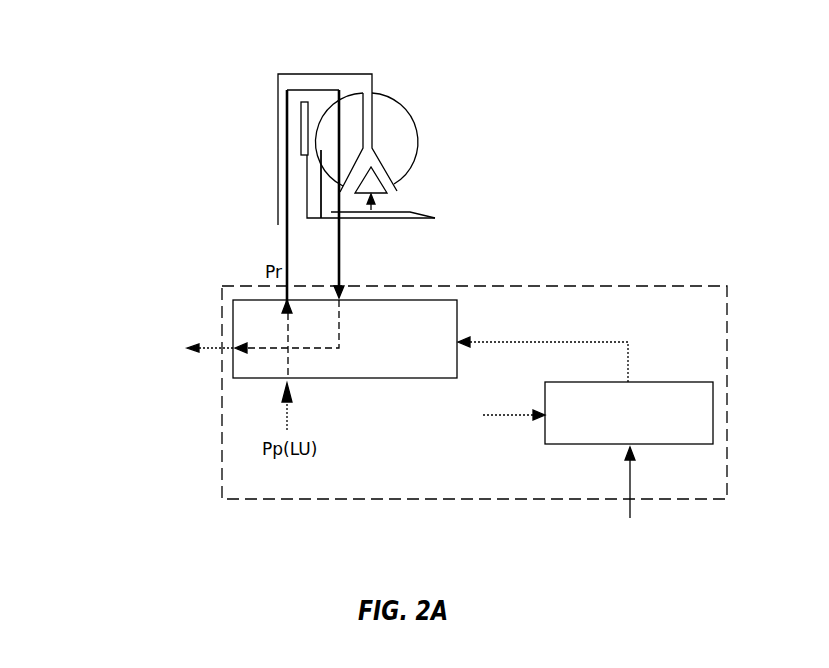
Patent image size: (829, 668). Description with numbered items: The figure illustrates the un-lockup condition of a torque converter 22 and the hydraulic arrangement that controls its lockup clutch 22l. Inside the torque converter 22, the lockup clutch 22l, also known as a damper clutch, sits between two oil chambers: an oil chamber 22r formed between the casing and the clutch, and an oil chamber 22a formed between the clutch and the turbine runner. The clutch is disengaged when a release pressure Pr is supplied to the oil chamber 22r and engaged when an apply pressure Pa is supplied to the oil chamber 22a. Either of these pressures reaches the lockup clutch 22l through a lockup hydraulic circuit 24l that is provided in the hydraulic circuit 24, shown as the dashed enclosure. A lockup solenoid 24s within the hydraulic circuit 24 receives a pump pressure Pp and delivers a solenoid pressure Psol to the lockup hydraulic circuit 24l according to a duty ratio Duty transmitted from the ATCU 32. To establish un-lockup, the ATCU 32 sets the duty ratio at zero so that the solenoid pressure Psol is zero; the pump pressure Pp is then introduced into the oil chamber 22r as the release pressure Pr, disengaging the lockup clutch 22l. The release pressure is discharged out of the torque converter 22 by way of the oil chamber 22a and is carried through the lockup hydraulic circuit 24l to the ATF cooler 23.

The torque converter 22 is at (356, 46).
The lockup clutch 22l is at (303, 130).
The oil chamber 22r is at (292, 175).
The oil chamber 22a is at (315, 178).
The ATF cooler 23 is at (133, 349).
The hydraulic circuit 24 is at (634, 284).
The lockup hydraulic circuit 24l is at (382, 378).
The lockup solenoid 24s is at (686, 382).
The ATCU 32 is at (629, 495).